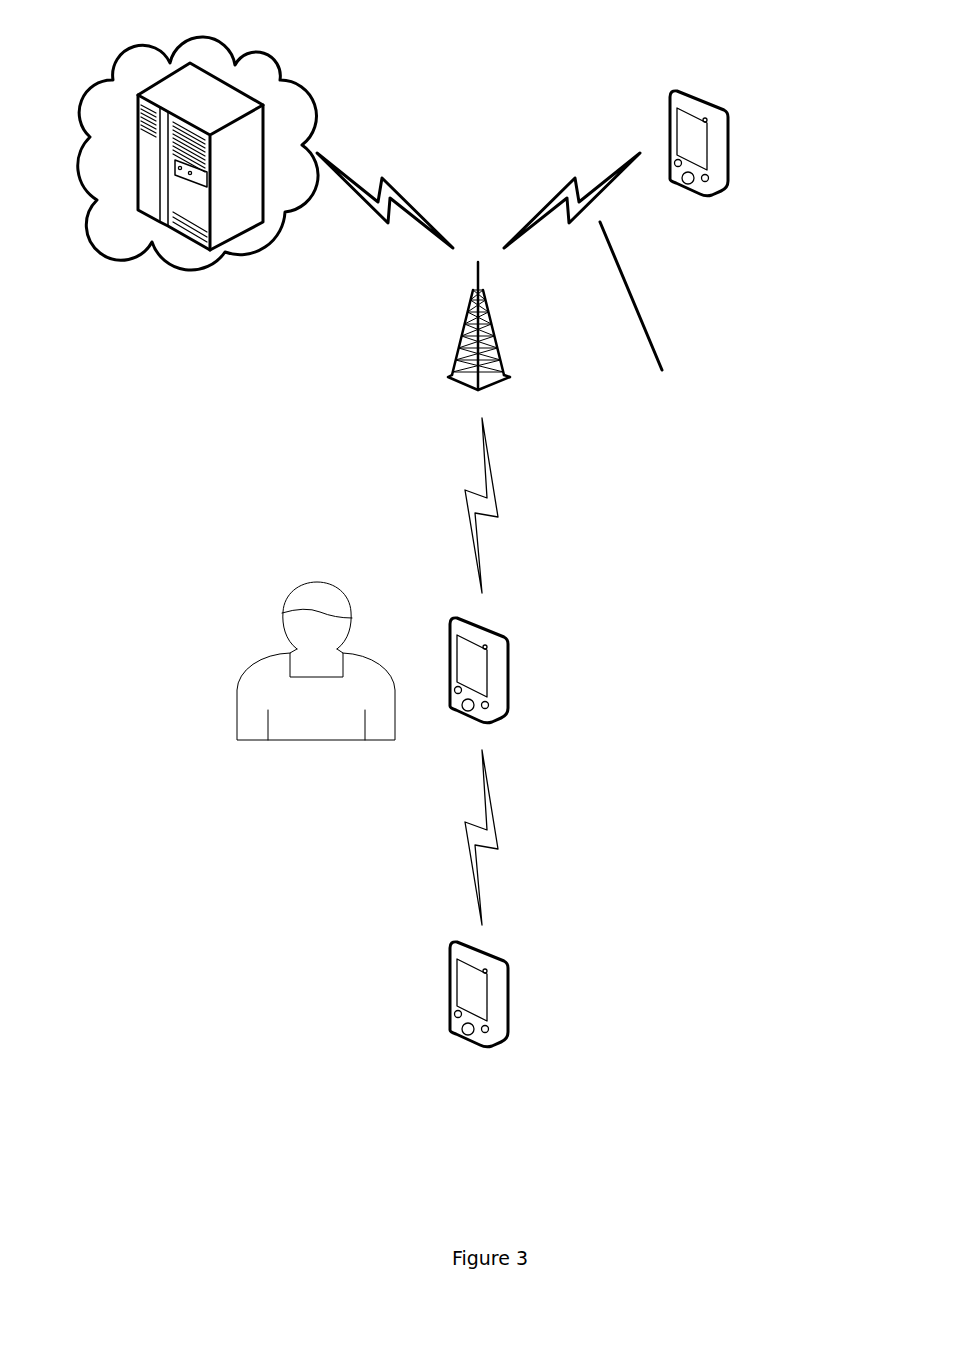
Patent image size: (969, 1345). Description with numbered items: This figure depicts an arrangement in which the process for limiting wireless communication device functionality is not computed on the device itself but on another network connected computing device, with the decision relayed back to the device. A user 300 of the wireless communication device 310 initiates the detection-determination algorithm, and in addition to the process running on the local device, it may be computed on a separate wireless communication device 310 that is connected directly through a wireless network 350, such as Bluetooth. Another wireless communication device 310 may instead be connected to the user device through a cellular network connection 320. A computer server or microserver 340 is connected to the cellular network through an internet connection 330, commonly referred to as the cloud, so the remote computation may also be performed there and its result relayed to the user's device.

The user 300 is at (237, 660).
The wireless communication device 310 is at (728, 140).
The cellular network connection 320 is at (520, 488).
The internet connection 330 is at (380, 237).
The computer server or microserver 340 is at (200, 100).
The wireless network 350 is at (507, 835).